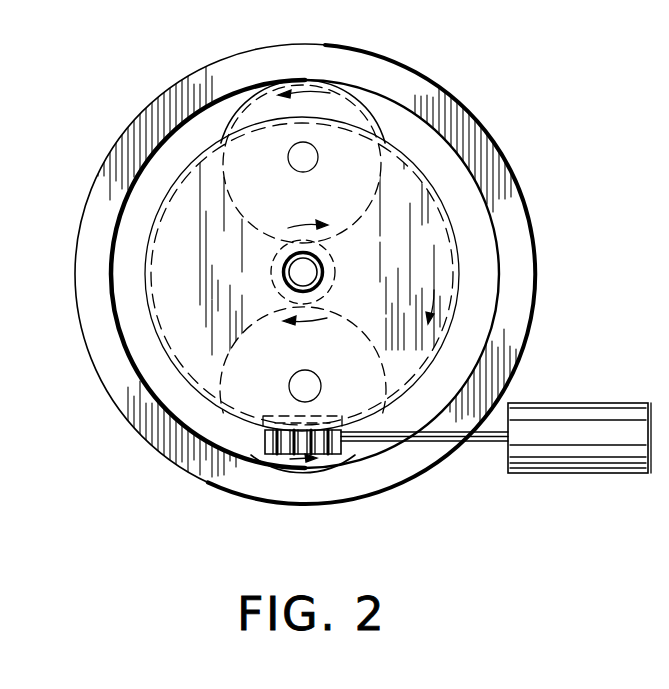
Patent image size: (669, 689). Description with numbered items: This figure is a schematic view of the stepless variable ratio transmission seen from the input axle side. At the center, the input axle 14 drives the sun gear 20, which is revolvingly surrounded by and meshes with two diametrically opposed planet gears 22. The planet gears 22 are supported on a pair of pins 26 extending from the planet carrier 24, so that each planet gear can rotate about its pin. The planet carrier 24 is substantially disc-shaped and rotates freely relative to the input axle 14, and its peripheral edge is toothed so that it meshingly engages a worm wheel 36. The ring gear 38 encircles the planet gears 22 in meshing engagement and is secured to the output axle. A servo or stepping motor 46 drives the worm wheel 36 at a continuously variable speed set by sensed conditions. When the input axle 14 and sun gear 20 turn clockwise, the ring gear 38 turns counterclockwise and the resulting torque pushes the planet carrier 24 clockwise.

The input axle 14 is at (287, 262).
The sun gear 20 is at (332, 252).
The planet gears 22 is at (262, 108).
The planet carrier 24 is at (150, 208).
The pins 26 is at (318, 150).
The worm wheel 36 is at (262, 442).
The ring gear 38 is at (432, 103).
The servo or stepping motor 46 is at (600, 478).